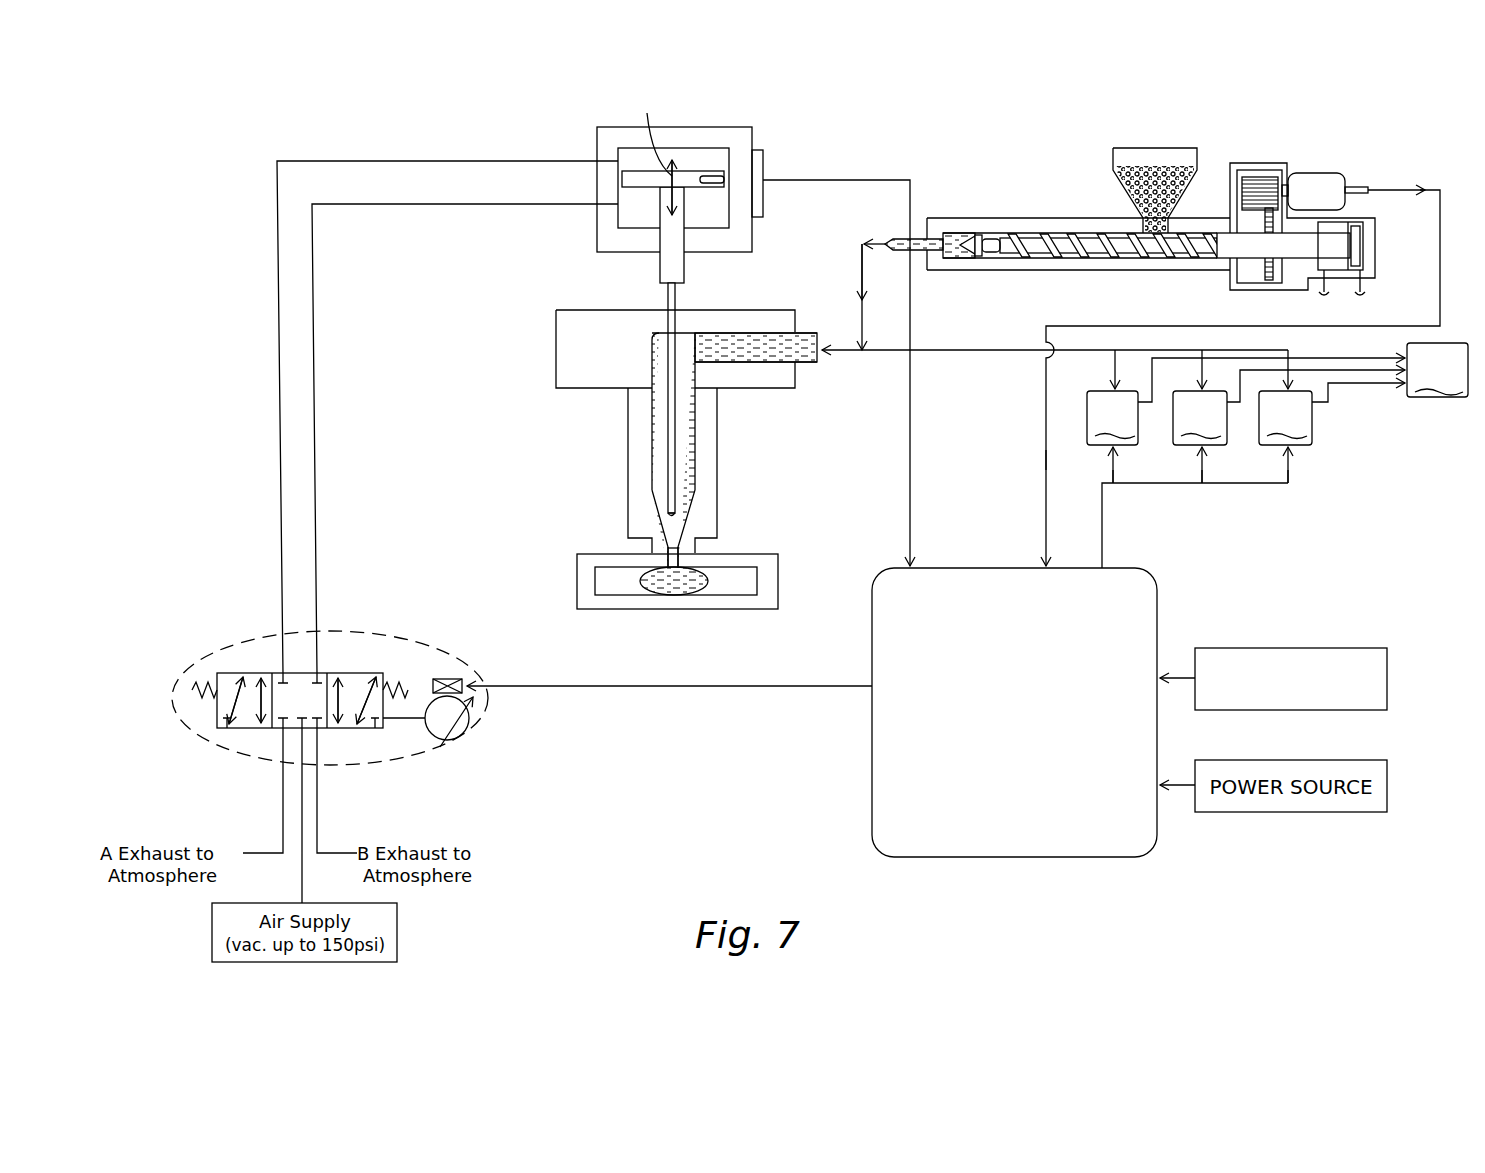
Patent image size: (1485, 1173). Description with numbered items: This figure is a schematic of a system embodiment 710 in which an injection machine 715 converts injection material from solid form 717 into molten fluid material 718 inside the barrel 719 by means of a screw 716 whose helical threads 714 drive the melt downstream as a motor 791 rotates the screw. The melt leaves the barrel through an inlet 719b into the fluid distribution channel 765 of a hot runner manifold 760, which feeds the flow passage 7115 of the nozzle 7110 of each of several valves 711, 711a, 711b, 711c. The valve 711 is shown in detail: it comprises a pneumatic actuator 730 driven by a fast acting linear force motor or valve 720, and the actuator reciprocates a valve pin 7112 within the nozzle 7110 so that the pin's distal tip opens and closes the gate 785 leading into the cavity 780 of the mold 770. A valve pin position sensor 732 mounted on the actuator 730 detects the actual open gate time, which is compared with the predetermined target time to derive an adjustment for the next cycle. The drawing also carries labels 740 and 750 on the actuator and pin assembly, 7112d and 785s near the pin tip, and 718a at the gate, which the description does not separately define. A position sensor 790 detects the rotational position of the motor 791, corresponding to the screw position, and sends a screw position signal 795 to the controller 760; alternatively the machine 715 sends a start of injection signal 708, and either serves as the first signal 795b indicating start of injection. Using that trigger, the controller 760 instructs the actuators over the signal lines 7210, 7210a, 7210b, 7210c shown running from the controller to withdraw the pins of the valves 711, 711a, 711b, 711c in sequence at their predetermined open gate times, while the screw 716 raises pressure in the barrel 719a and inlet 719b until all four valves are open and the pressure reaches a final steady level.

The system 710 is at (470, 140).
The valve 711 is at (802, 126).
The pneumatic actuator 730 is at (596, 140).
The piston 740 is at (698, 172).
The valve pin position sensor 732 is at (765, 168).
The plunger rod 750 is at (677, 300).
The manifold / controller 760 is at (766, 310).
The fluid distribution channel 765 is at (651, 334).
The valve pin 7112 is at (670, 420).
The injection nozzle 7110 is at (628, 456).
The nozzle flow passage 7115 is at (652, 478).
The plunger distal end 7112d is at (668, 521).
The shot of fluid 785s is at (668, 545).
The injection tip 718a is at (679, 563).
The mold 770 is at (777, 551).
The mold cavity 780 is at (753, 578).
The gate 785 is at (666, 560).
The linear force motor or valve 720 is at (212, 646).
The control signal line 7210 is at (792, 687).
The control signal 7210a is at (1116, 468).
The control signal 7210b is at (1204, 468).
The control signal 7210c is at (1290, 468).
The second valve 711a is at (1246, 397).
The third valve 711b is at (1289, 397).
The fourth valve 711c is at (1332, 397).
The screw position signal 795 is at (1381, 190).
The first signal 795b is at (1046, 462).
The injection machine 715 is at (1085, 178).
The barrel 719 is at (1079, 262).
The helical threads 714 is at (1152, 258).
The screw 716 is at (1058, 243).
The molten fluid material 718 is at (954, 240).
The barrel 719a is at (965, 233).
The inlet 719b is at (904, 240).
The solid form injection material 717 is at (1168, 172).
The motor 791 is at (1303, 172).
The position sensor 790 is at (1360, 187).
The start of injection signal 708 is at (1182, 676).